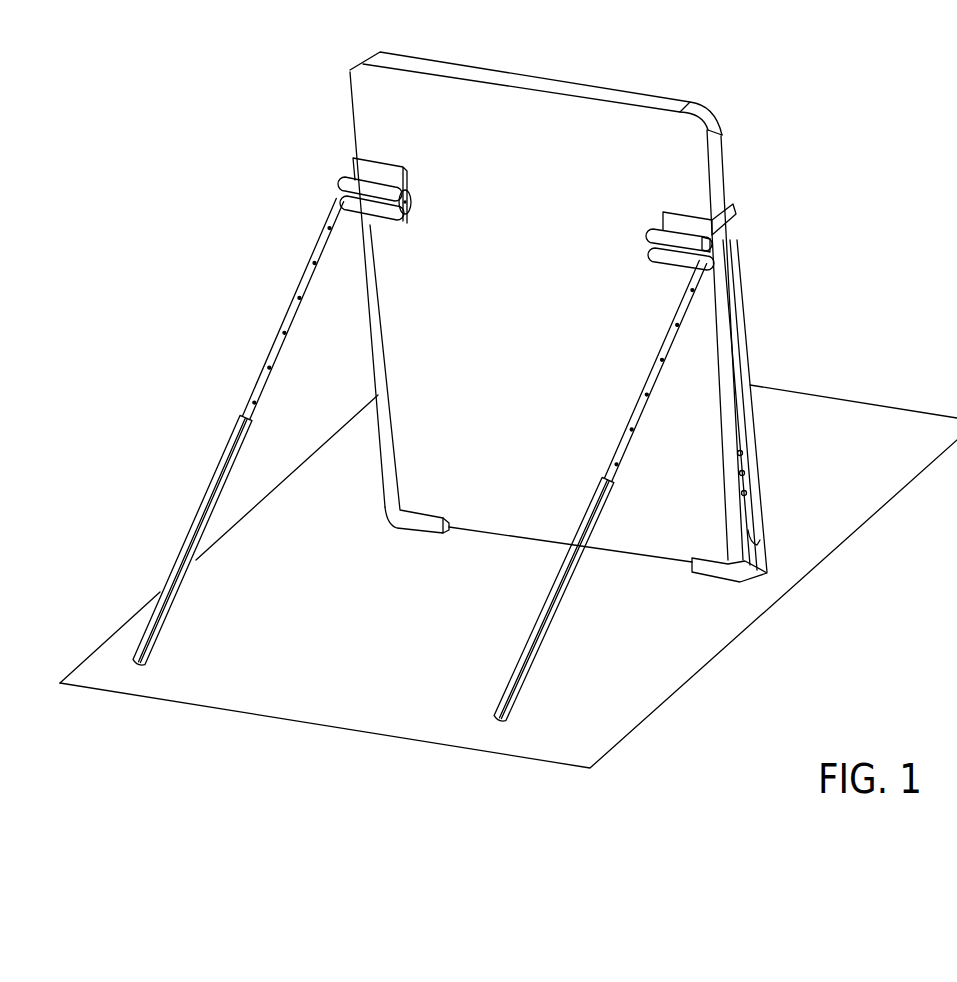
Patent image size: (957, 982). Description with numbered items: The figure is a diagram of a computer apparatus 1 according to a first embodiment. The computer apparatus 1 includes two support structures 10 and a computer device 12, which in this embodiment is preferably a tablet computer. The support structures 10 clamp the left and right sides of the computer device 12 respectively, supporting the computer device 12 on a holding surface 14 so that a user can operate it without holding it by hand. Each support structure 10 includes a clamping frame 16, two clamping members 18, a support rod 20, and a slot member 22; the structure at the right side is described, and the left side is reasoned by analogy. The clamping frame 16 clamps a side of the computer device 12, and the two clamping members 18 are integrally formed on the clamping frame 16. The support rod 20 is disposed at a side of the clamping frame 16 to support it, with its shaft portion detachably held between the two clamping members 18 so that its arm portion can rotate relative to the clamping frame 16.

The computer apparatus 1 is at (787, 95).
The support structure 10 is at (345, 170).
The computer device 12 is at (645, 100).
The holding surface 14 is at (895, 422).
The clamping frame 16 is at (730, 212).
The clamping member 18 is at (708, 233).
The support rod 20 is at (672, 337).
The slot member 22 is at (598, 508).